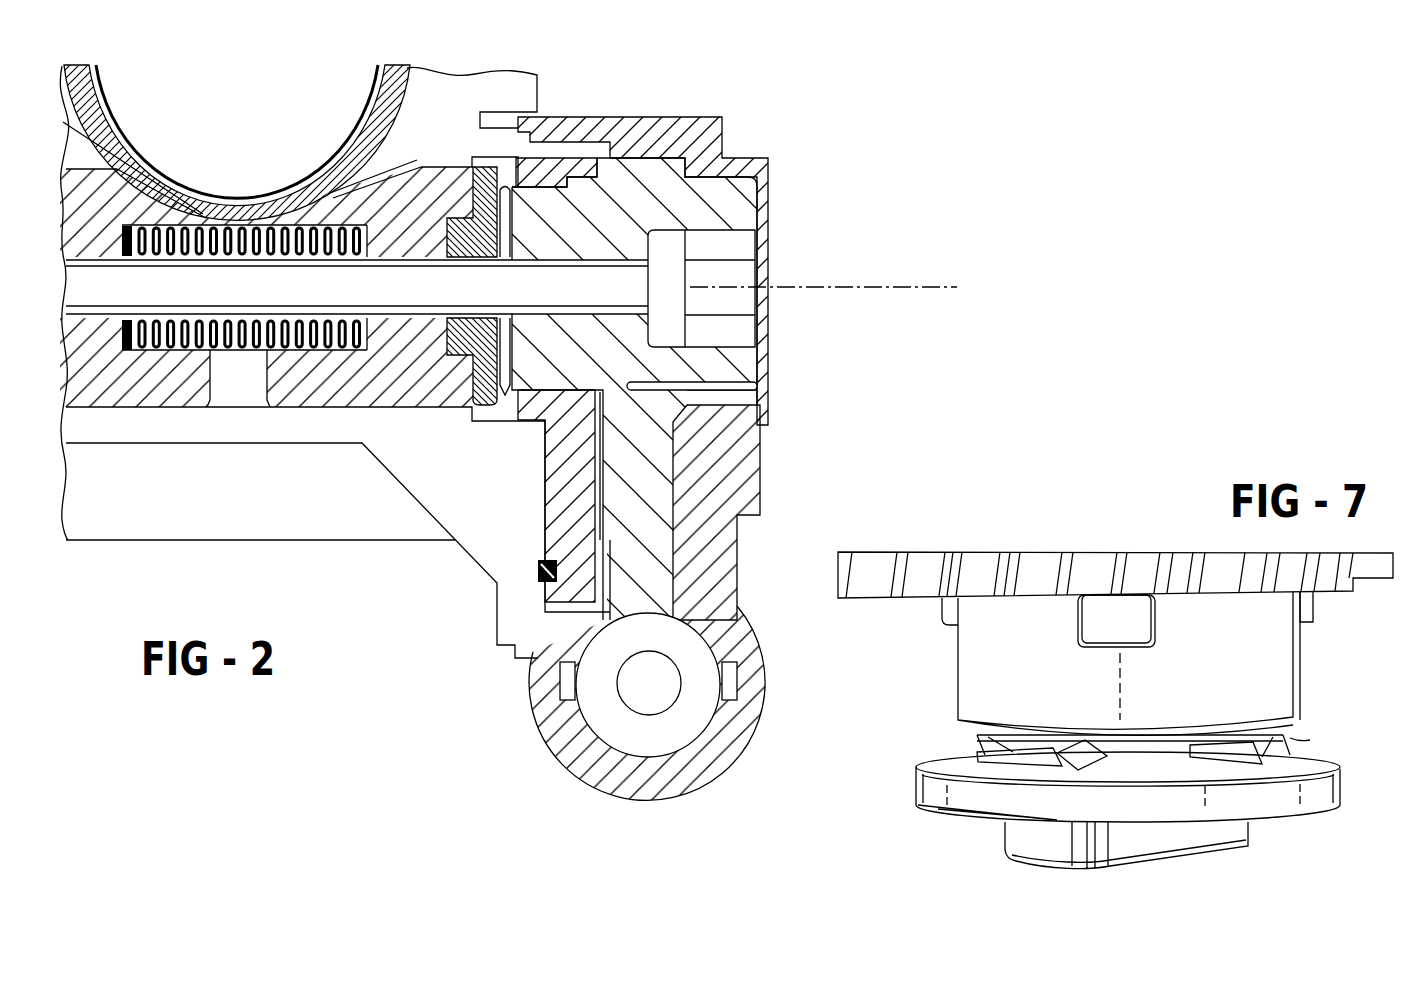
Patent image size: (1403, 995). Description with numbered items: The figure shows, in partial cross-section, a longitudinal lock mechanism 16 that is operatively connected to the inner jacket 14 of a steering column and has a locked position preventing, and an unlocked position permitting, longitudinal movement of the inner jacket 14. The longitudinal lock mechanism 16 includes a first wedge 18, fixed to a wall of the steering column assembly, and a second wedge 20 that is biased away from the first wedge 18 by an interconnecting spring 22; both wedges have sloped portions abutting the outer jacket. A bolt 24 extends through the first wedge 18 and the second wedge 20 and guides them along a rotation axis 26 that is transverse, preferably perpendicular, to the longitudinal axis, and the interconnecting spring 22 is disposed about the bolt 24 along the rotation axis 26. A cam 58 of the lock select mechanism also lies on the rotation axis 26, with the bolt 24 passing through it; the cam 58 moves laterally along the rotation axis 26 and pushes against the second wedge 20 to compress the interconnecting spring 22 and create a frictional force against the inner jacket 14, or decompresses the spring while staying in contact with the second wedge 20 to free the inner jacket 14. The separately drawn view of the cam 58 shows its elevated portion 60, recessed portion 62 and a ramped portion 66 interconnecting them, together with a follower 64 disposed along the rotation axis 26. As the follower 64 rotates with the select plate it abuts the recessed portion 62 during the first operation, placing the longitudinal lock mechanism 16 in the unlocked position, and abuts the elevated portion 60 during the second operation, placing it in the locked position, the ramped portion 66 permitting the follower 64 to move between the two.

In FIG. 2, the inner jacket 14 is at (57, 100).
In FIG. 2, the longitudinal lock mechanism 16 is at (710, 88).
In FIG. 2, the first wedge 18 is at (108, 380).
In FIG. 2, the second wedge 20 is at (400, 185).
In FIG. 2, the interconnecting spring 22 is at (243, 350).
In FIG. 2, the bolt 24 is at (617, 257).
In FIG. 2, the rotation axis 26 is at (867, 288).
In FIG. 2, the cam 58 is at (490, 415).
In FIG. 7, the cam 58 is at (913, 826).
In FIG. 7, the elevated portion 60 is at (1022, 758).
In FIG. 7, the recessed portion 62 is at (1195, 765).
In FIG. 2, the follower 64 is at (769, 204).
In FIG. 7, the follower 64 is at (1033, 625).
In FIG. 7, the ramped portion 66 is at (1083, 758).